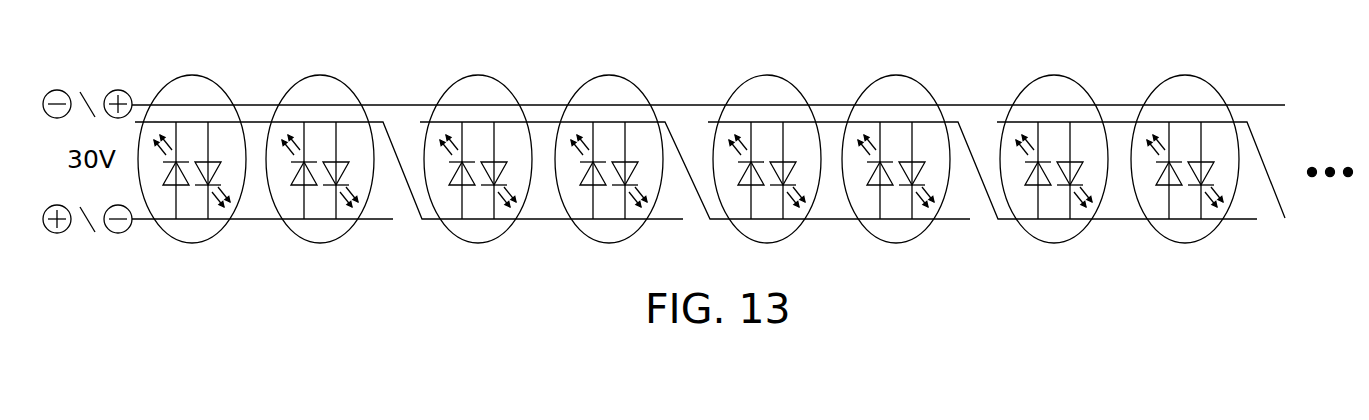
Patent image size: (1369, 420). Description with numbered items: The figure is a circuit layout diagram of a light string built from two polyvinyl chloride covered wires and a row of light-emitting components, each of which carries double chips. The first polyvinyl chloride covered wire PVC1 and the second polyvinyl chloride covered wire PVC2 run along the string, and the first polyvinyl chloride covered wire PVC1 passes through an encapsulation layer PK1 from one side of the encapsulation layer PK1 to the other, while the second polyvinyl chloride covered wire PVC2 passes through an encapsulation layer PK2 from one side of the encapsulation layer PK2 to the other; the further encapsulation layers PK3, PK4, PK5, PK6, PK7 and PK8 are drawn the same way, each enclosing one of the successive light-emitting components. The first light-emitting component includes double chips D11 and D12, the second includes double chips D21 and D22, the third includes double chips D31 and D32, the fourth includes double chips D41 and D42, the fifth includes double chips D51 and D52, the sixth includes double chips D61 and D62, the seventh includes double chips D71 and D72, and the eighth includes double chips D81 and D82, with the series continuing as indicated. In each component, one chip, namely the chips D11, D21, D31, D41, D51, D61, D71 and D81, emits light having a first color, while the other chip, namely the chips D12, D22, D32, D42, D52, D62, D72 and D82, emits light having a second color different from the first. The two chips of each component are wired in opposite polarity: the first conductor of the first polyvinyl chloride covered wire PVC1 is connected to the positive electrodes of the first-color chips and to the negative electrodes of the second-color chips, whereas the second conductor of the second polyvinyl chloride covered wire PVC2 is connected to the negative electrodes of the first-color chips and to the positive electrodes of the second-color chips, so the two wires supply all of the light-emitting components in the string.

The encapsulation layer PK1 is at (200, 132).
The encapsulation layer PK2 is at (328, 132).
The LED package PK3 is at (486, 132).
The LED package PK4 is at (617, 132).
The LED package PK5 is at (775, 132).
The LED package PK6 is at (904, 132).
The LED package PK7 is at (1062, 132).
The LED package PK8 is at (1193, 132).
The chip D11 is at (192, 199).
The chip D12 is at (192, 131).
The chip D21 is at (320, 199).
The chip D22 is at (320, 131).
The chip D31 is at (478, 199).
The chip D32 is at (478, 131).
The chip D41 is at (609, 199).
The chip D42 is at (609, 131).
The chip D51 is at (767, 199).
The chip D52 is at (767, 131).
The chip D61 is at (896, 199).
The chip D62 is at (896, 131).
The chip D71 is at (1054, 199).
The chip D72 is at (1054, 131).
The chip D81 is at (1185, 199).
The chip D82 is at (1185, 131).
The first polyvinyl chloride covered wire PVC1 is at (1236, 221).
The second polyvinyl chloride covered wire PVC2 is at (1258, 105).